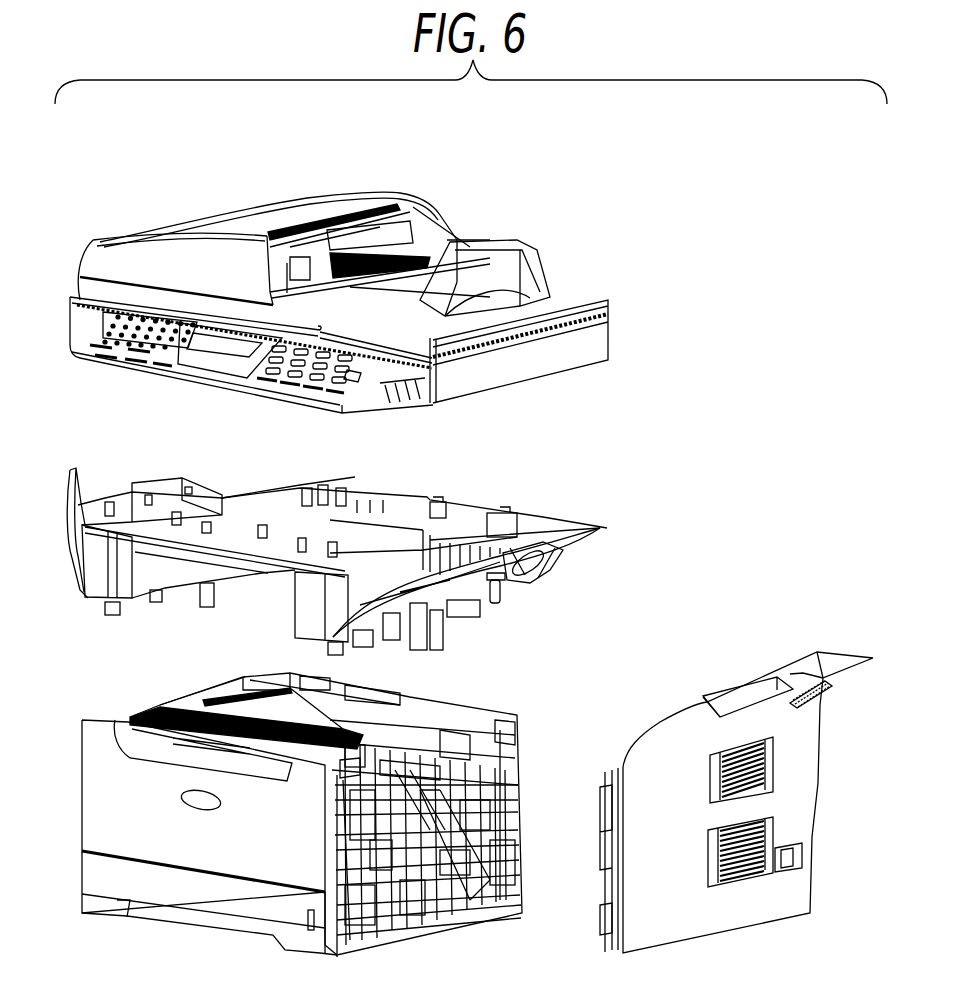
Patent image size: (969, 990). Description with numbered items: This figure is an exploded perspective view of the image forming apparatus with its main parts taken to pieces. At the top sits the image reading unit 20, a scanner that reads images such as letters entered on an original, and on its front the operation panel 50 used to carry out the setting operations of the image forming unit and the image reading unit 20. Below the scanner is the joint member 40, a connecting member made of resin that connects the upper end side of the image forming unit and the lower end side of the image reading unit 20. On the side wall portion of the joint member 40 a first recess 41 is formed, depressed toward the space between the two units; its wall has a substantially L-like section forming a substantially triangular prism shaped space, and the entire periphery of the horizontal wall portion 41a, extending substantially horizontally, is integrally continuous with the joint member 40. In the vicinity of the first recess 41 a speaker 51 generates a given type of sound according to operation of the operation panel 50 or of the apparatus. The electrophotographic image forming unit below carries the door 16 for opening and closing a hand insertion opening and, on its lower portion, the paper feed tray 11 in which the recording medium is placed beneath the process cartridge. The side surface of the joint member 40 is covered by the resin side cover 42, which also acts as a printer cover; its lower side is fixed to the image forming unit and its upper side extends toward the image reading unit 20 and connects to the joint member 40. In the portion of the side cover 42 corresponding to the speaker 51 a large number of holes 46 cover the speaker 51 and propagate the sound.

The image reading unit 20 is at (377, 194).
The operation panel 50 is at (93, 325).
The joint member 40 is at (468, 496).
The first recess 41 is at (455, 585).
The horizontal wall portion 41a is at (495, 603).
The speaker 51 is at (547, 566).
The door 16 is at (93, 757).
The paper feed tray 11 is at (93, 877).
The side cover 42 is at (817, 828).
The holes 46 is at (822, 684).